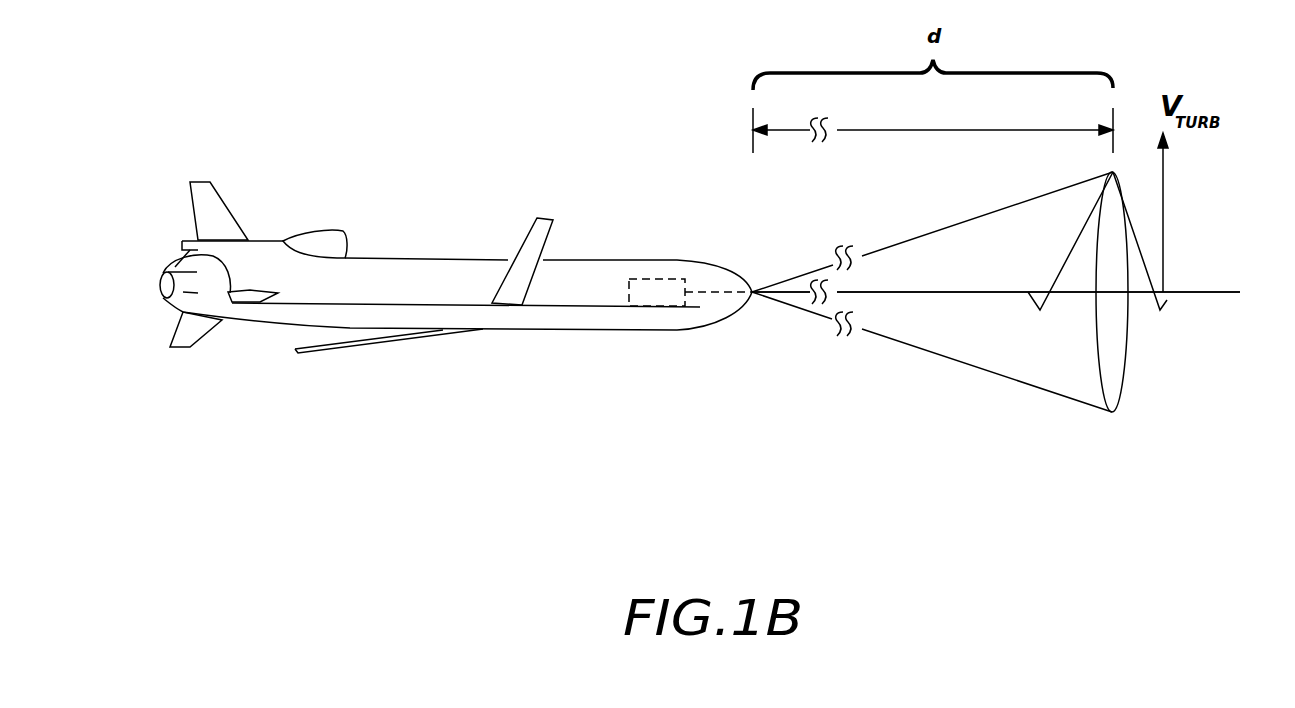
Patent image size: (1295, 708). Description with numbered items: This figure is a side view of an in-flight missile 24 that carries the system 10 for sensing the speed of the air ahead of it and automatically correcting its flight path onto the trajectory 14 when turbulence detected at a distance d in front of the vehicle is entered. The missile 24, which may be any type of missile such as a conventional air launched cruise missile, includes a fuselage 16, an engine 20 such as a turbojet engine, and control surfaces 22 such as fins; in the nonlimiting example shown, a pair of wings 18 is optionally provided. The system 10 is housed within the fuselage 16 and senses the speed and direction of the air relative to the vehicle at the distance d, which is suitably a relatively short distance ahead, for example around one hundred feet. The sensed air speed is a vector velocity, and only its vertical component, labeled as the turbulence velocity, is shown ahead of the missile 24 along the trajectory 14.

The system 10 is at (661, 290).
The trajectory 14 is at (1220, 292).
The fuselage 16 is at (593, 260).
The pair of wings 18 is at (523, 242).
The engine 20 is at (255, 266).
The control surfaces 22 is at (193, 203).
The missile 24 is at (527, 390).